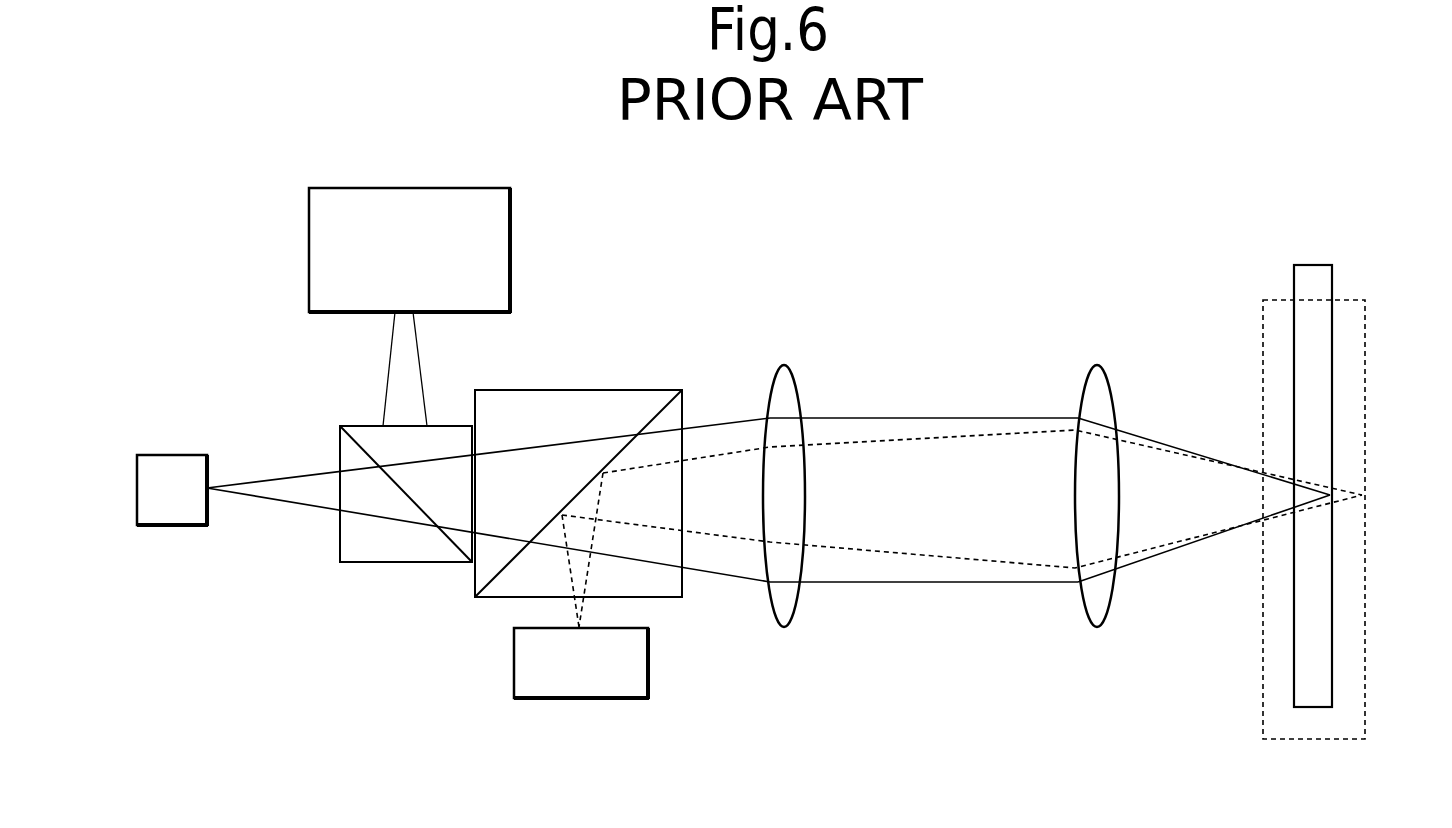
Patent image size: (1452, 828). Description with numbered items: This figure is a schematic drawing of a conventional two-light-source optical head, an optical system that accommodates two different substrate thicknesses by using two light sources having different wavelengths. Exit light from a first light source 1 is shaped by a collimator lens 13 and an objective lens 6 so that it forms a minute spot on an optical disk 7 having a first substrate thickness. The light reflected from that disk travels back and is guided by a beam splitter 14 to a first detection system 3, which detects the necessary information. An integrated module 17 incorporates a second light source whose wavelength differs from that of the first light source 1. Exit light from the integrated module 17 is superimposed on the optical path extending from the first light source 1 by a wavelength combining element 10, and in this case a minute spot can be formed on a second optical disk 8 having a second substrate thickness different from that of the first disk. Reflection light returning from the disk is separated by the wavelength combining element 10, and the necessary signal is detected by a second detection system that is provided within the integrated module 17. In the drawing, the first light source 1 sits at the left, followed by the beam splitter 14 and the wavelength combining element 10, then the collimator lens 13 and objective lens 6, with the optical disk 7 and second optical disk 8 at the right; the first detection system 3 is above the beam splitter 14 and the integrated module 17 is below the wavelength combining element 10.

The first light source 1 is at (160, 513).
The first detection system 3 is at (503, 253).
The objective lens 6 is at (1103, 388).
The optical disk 7 is at (1313, 287).
The second optical disk 8 is at (1367, 663).
The wavelength combining element 10 is at (500, 570).
The collimator lens 13 is at (787, 388).
The beam splitter 14 is at (351, 550).
The integrated module 17 is at (568, 680).